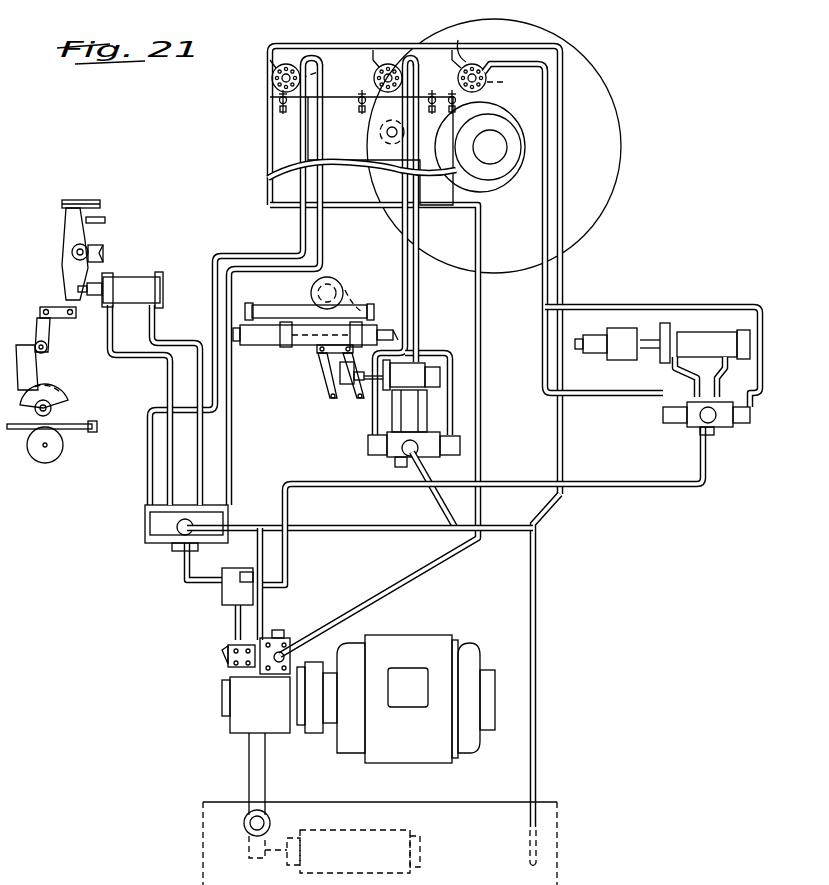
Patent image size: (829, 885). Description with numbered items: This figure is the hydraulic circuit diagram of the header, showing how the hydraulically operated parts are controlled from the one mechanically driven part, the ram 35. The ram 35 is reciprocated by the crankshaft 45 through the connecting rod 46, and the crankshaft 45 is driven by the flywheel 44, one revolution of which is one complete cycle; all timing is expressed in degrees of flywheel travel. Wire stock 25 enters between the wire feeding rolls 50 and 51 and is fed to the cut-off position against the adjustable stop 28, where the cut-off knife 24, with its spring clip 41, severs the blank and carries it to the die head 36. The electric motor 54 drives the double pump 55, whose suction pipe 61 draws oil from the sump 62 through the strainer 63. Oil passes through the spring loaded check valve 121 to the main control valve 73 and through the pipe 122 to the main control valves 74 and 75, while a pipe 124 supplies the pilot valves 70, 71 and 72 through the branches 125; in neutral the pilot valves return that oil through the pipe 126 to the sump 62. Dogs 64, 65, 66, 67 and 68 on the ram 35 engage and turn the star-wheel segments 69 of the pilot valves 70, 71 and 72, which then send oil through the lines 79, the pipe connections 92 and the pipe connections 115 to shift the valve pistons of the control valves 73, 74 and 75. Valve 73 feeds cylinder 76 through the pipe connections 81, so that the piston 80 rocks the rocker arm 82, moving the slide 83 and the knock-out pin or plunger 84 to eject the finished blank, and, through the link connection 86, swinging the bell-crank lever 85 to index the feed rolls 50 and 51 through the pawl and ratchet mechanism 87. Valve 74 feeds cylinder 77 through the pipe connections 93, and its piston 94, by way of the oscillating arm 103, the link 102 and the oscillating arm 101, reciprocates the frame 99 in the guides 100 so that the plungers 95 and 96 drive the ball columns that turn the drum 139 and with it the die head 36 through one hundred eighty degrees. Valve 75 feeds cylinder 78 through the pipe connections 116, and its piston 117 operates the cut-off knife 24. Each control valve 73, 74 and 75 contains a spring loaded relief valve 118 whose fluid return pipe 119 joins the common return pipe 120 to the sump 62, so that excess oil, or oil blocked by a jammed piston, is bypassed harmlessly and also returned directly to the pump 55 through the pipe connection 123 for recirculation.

The cut-off knife 24 is at (588, 356).
The wire stock 25 is at (17, 430).
The stop 28 is at (94, 420).
The ram 35 is at (312, 135).
The die head 36 is at (342, 290).
The spring clip 41 is at (585, 338).
The flywheel 44 is at (612, 178).
The crankshaft 45 is at (490, 157).
The connecting rod 46 is at (513, 138).
The wire feeding roll 50 is at (30, 408).
The wire feeding roll 51 is at (62, 450).
The electric motor 54 is at (445, 640).
The double pump 55 is at (245, 712).
The suction pipe 61 is at (262, 773).
The sump 62 is at (203, 803).
The strainer 63 is at (385, 830).
The dog 64 is at (268, 94).
The dog 65 is at (278, 104).
The dog 66 is at (360, 98).
The dog 67 is at (432, 88).
The dog 68 is at (456, 40).
The segment 69 is at (416, 73).
The pilot valve 70 is at (291, 64).
The pilot valve 71 is at (391, 64).
The pilot valve 72 is at (474, 64).
The main control valve 73 is at (160, 545).
The main control valve 74 is at (408, 460).
The main control valve 75 is at (695, 428).
The cylinder 76 is at (140, 277).
The cylinder 77 is at (420, 363).
The cylinder 78 is at (715, 332).
The lines 79 is at (219, 408).
The piston 80 is at (98, 283).
The pipe connections 81 is at (172, 386).
The rocker arm 82 is at (70, 276).
The slide 83 is at (85, 200).
The pin or plunger 84 is at (105, 219).
The bell-crank lever 85 is at (50, 333).
The link connection 86 is at (55, 307).
The pawl and ratchet mechanism 87 is at (45, 382).
The pipe connections 92 is at (410, 318).
The pipe connections 93 is at (427, 397).
The piston 94 is at (378, 402).
The plunger 95 is at (270, 306).
The plunger 96 is at (366, 310).
The frame 99 is at (248, 348).
The guides 100 is at (286, 349).
The oscillating arm 101 is at (322, 378).
The link 102 is at (332, 405).
The oscillating arm 103 is at (356, 400).
The pipe connections 115 is at (540, 297).
The pipe connections 116 is at (712, 380).
The piston 117 is at (648, 340).
The relief valve 118 is at (128, 527).
The fluid return pipe 119 is at (462, 500).
The common return pipe 120 is at (537, 685).
The check valve 121 is at (226, 590).
The pipe 122 is at (312, 470).
The pipe connection 123 is at (265, 620).
The pipe 124 is at (372, 602).
The branches 125 is at (360, 163).
The pipe 126 is at (562, 440).
The drum 139 is at (327, 277).